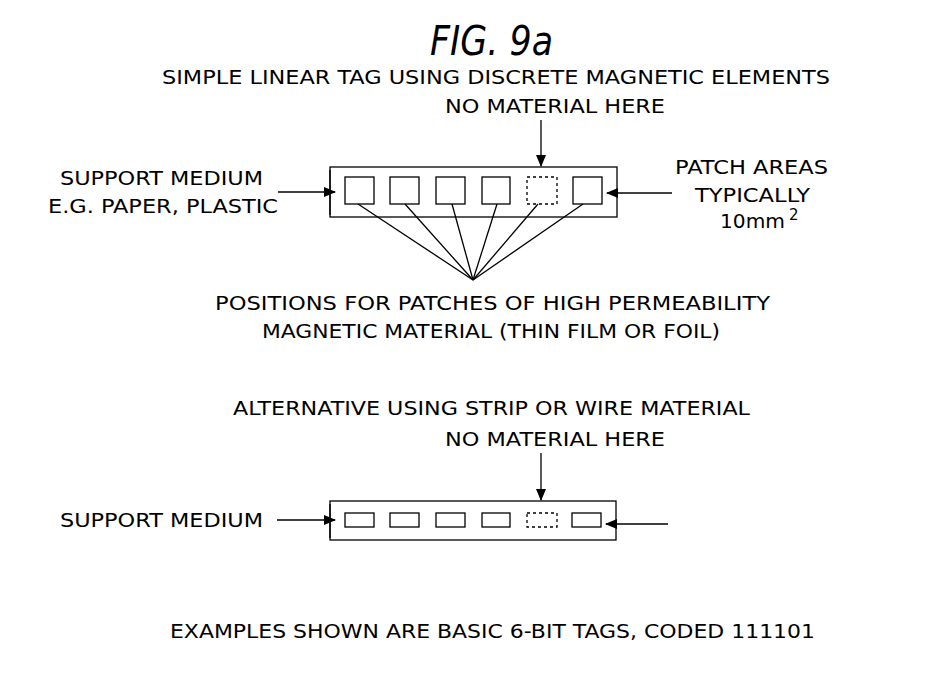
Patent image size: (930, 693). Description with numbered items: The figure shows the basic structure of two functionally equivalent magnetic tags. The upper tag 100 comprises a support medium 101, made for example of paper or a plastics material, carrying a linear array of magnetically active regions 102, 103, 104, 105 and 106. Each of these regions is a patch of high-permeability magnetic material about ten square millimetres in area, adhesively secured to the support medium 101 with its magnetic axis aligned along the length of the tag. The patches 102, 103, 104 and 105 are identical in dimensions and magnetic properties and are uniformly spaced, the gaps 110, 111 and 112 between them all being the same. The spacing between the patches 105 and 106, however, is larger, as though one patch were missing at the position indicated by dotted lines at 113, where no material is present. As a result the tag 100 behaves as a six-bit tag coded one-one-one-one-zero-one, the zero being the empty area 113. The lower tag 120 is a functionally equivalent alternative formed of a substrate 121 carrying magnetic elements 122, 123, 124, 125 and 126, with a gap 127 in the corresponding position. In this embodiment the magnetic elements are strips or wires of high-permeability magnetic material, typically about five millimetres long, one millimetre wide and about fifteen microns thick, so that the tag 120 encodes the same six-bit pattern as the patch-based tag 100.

The tag 100 is at (340, 165).
The support medium 101 is at (337, 217).
The magnetically active region 102 is at (358, 186).
The magnetically active region 103 is at (403, 186).
The magnetically active region 104 is at (449, 186).
The magnetically active region 105 is at (494, 186).
The magnetically active region 106 is at (584, 186).
The gap 110 is at (384, 204).
The gap 111 is at (428, 204).
The gap 112 is at (474, 204).
The missing patch position 113 is at (541, 204).
The tag 120 is at (340, 499).
The substrate 121 is at (333, 540).
The magnetic element 122 is at (358, 520).
The magnetic element 123 is at (403, 520).
The magnetic element 124 is at (449, 520).
The magnetic element 125 is at (494, 520).
The magnetic element 126 is at (584, 520).
The gap 127 is at (545, 527).